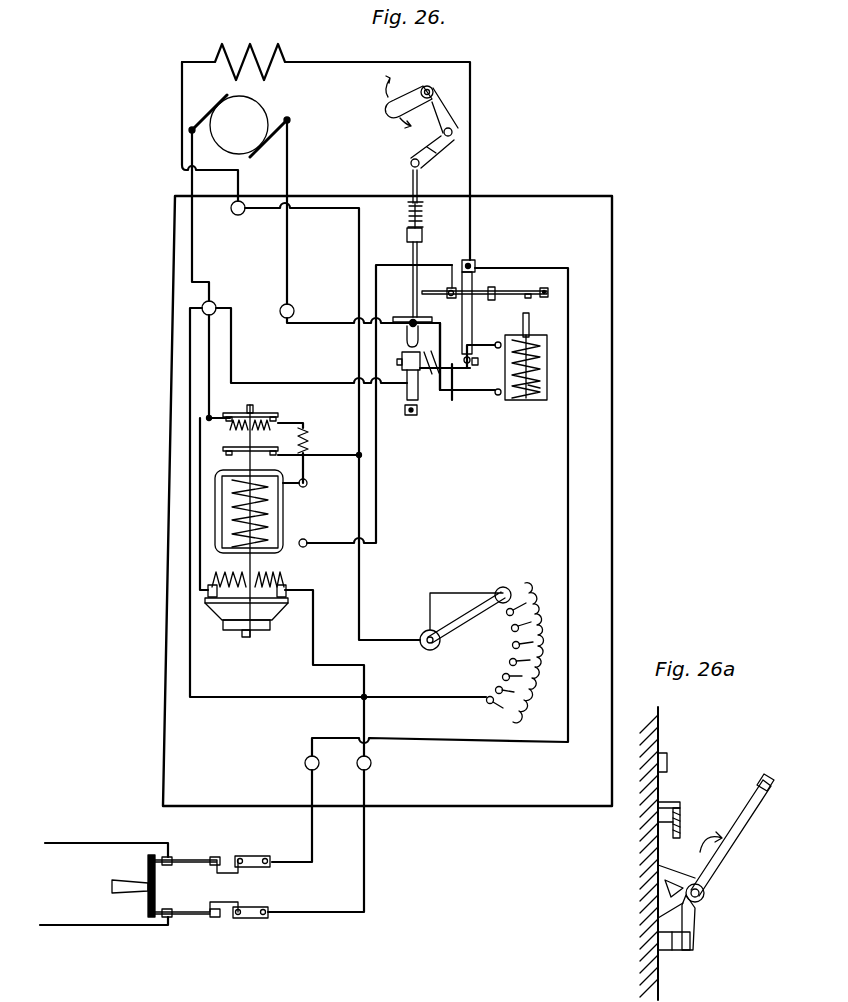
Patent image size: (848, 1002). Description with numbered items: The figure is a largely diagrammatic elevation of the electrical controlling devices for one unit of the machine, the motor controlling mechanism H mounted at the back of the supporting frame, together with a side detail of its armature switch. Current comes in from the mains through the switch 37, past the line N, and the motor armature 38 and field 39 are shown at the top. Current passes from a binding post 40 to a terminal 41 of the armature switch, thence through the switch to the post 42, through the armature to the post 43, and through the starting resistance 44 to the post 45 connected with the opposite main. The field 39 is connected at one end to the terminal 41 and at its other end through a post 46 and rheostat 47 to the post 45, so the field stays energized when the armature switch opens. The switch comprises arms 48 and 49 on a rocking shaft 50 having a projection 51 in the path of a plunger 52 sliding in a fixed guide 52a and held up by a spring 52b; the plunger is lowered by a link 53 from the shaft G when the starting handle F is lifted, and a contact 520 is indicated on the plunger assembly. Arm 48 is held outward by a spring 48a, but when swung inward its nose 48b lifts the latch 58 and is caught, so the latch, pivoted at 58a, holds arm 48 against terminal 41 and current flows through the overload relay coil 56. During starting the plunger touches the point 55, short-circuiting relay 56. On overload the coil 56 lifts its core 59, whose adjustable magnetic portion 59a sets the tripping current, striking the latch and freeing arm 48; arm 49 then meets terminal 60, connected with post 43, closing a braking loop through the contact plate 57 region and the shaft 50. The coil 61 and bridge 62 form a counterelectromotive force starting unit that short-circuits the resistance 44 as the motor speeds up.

In FIG. 26, the switch 37 is at (202, 918).
In FIG. 26, the armature 38 is at (240, 122).
In FIG. 26, the field 39 is at (246, 23).
In FIG. 26, the binding post 40 is at (296, 763).
In FIG. 26, the terminal 41 is at (474, 262).
In FIG. 26A, the terminal 41 is at (670, 776).
In FIG. 26, the post 42 is at (280, 311).
In FIG. 26, the post 43 is at (214, 304).
In FIG. 26, the starting resistance 44 is at (225, 572).
In FIG. 26, the post 45 is at (372, 763).
In FIG. 26, the post 46 is at (238, 216).
In FIG. 26, the rheostat 47 is at (482, 653).
In FIG. 26, the switch arm 48 is at (470, 288).
In FIG. 26A, the switch arm 48 is at (738, 820).
In FIG. 26, the spring 48a is at (425, 353).
In FIG. 26A, the nose 48b is at (716, 866).
In FIG. 26, the switch arm 49 is at (419, 405).
In FIG. 26A, the switch arm 49 is at (700, 925).
In FIG. 26, the rocking shaft 50 is at (452, 393).
In FIG. 26, the projection 51 is at (402, 362).
In FIG. 26, the plunger 52 is at (407, 337).
In FIG. 26, the fixed guide 52a is at (420, 238).
In FIG. 26, the spring 52b is at (423, 212).
In FIG. 26, the contact 520 is at (392, 313).
In FIG. 26, the link 53 is at (441, 167).
In FIG. 26, the point 55 is at (468, 367).
In FIG. 26, the overload relay 56 is at (538, 356).
In FIG. 26, the contact plate 57 is at (402, 323).
In FIG. 26A, the contact plate 57 is at (662, 893).
In FIG. 26, the latch 58 is at (484, 284).
In FIG. 26A, the latch 58 is at (681, 820).
In FIG. 26, the pivot 58a is at (550, 291).
In FIG. 26, the core 59 is at (531, 323).
In FIG. 26, the magnetic portion 59a is at (540, 380).
In FIG. 26, the terminal 60 is at (410, 418).
In FIG. 26A, the terminal 60 is at (670, 950).
In FIG. 26, the coil 61 is at (272, 497).
In FIG. 26, the bridge 62 is at (278, 620).
In FIG. 26, the starting handle F is at (386, 106).
In FIG. 26, the shaft G is at (427, 85).
In FIG. 26, the motor controlling mechanism H is at (612, 492).
In FIG. 26A, the motor controlling mechanism H is at (648, 860).
In FIG. 26, the line N is at (377, 857).